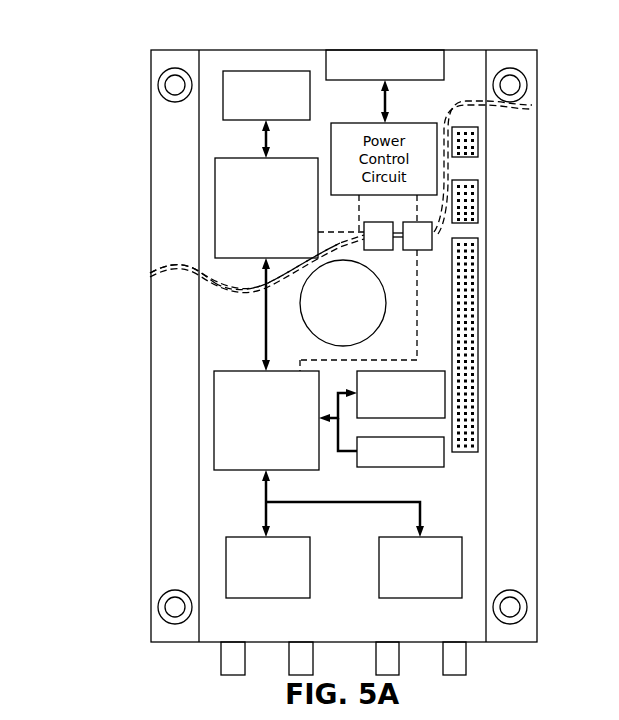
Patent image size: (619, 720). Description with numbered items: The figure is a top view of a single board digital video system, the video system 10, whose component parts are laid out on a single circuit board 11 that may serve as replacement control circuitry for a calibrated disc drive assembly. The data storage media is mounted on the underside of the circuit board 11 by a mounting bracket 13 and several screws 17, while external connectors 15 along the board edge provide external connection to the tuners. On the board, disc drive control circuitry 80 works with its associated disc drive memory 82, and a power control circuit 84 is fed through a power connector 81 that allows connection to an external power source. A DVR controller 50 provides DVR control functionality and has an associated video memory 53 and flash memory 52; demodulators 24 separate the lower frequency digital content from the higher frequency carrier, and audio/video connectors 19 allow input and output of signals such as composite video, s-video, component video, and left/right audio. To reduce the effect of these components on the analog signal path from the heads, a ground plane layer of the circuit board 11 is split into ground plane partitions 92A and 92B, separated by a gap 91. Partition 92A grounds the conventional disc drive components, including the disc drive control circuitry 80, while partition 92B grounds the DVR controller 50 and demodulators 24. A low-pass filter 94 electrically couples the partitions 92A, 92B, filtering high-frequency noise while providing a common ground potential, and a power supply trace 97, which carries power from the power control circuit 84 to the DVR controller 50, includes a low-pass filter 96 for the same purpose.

The video system 10 is at (90, 52).
The circuit board 11 is at (213, 72).
The mounting bracket 13 is at (170, 137).
The external connectors 15 is at (221, 661).
The screws 17 is at (150, 88).
The audio/video connectors 19 is at (478, 322).
The demodulators 24 is at (226, 568).
The DVR controller 50 is at (214, 440).
The flash memory 52 is at (445, 458).
The video memory 53 is at (445, 398).
The disc drive control circuitry 80 is at (215, 198).
The power connector 81 is at (417, 50).
The disc drive memory 82 is at (274, 71).
The power control circuit 84 is at (530, 107).
The gap 91 is at (138, 273).
The ground plane partition 92A is at (182, 259).
The ground plane partition 92B is at (276, 282).
The low-pass filter 94 is at (376, 240).
The low-pass filter 96 is at (425, 240).
The power supply trace 97 is at (417, 305).